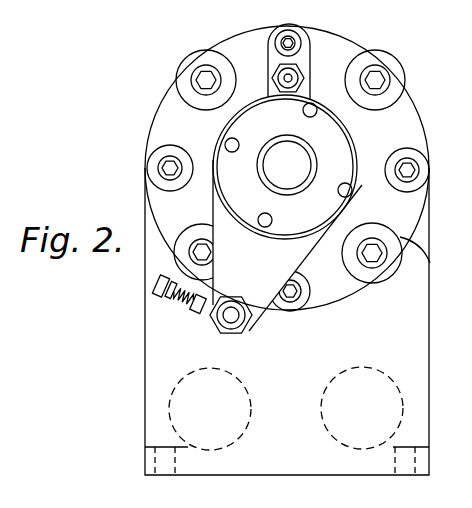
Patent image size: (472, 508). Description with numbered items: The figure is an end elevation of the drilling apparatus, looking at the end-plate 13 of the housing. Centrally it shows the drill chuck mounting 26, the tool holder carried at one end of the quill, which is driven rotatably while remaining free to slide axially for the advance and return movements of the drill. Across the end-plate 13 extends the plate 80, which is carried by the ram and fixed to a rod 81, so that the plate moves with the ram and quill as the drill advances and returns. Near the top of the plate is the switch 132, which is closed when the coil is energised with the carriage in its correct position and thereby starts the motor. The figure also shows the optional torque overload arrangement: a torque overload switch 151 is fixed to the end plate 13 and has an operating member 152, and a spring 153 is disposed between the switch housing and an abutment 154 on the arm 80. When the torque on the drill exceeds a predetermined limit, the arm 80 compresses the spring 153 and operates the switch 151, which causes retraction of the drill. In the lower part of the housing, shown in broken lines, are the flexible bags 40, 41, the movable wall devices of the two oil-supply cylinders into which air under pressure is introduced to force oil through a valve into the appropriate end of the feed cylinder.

The end-plate 13 is at (408, 285).
The drill chuck mounting 26 is at (297, 158).
The flexible bag 40 is at (241, 378).
The flexible bag 41 is at (331, 387).
The plate 80 is at (287, 177).
The rod 81 is at (241, 331).
The switch 132 is at (297, 74).
The torque overload switch 151 is at (152, 291).
The operating member 152 is at (170, 298).
The spring 153 is at (184, 306).
The abutment 154 is at (205, 314).